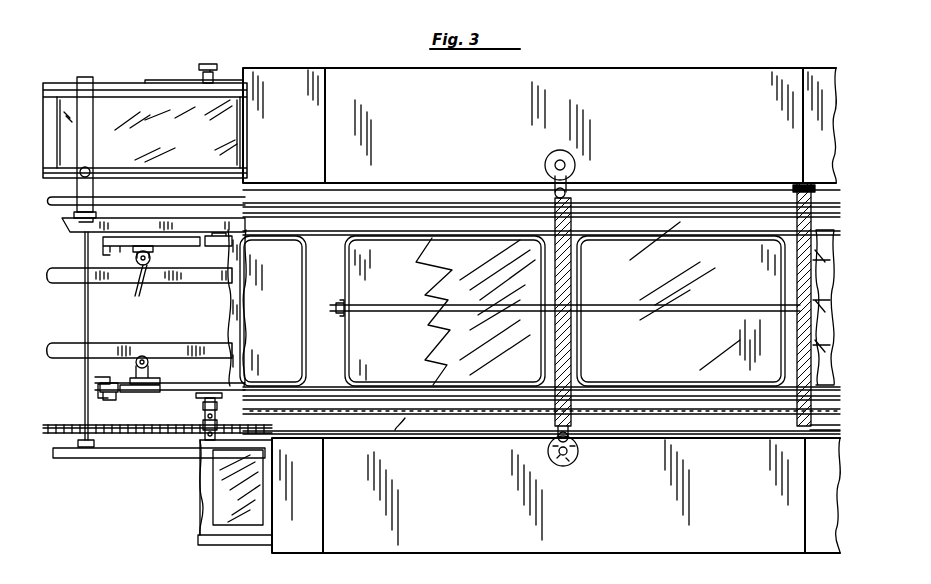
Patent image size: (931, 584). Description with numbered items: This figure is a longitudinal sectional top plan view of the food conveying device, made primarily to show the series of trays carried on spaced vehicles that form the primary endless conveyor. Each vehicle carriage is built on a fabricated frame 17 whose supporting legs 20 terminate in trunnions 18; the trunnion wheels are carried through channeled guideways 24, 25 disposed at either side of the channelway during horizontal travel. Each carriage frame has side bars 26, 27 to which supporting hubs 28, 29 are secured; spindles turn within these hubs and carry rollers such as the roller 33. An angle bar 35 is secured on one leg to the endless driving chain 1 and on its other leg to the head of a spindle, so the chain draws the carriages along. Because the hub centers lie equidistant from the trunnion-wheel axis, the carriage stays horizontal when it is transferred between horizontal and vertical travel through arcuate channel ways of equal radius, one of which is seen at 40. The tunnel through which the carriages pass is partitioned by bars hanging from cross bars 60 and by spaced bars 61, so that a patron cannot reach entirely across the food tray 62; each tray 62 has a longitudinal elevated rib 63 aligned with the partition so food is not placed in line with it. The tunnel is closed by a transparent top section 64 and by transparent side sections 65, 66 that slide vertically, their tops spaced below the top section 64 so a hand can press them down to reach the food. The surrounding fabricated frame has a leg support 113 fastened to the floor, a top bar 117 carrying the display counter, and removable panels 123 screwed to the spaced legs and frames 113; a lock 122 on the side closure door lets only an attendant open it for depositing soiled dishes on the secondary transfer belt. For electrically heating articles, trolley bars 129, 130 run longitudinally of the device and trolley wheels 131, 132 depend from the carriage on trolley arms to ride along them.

The endless driving chain 1 is at (132, 432).
The fabricated frame 17 is at (236, 290).
The trunnion 18 is at (135, 248).
The supporting leg 20 is at (100, 378).
The channeled guideway 24 is at (152, 226).
The channeled guideway 25 is at (208, 428).
The side bar 26 is at (178, 386).
The side bar 27 is at (183, 242).
The supporting hub 28 is at (198, 396).
The supporting hub 29 is at (225, 240).
The roller 33 is at (203, 407).
The angle bar 35 is at (202, 435).
The channel way arc 40 is at (240, 523).
The cross bar 60 is at (605, 198).
The spaced bar 61 is at (638, 302).
The food tray 62 is at (432, 215).
The longitudinal elevated rib 63 is at (270, 306).
The top section 64 is at (488, 200).
The side section 65 is at (410, 416).
The side section 66 is at (380, 200).
The leg support 113 is at (78, 458).
The top bar 117 is at (85, 105).
The lock 122 is at (215, 72).
The panel 123 is at (104, 458).
The trolley bar 129 is at (120, 280).
The trolley bar 130 is at (66, 346).
The trolley wheel 131 is at (143, 290).
The trolley wheel 132 is at (148, 358).